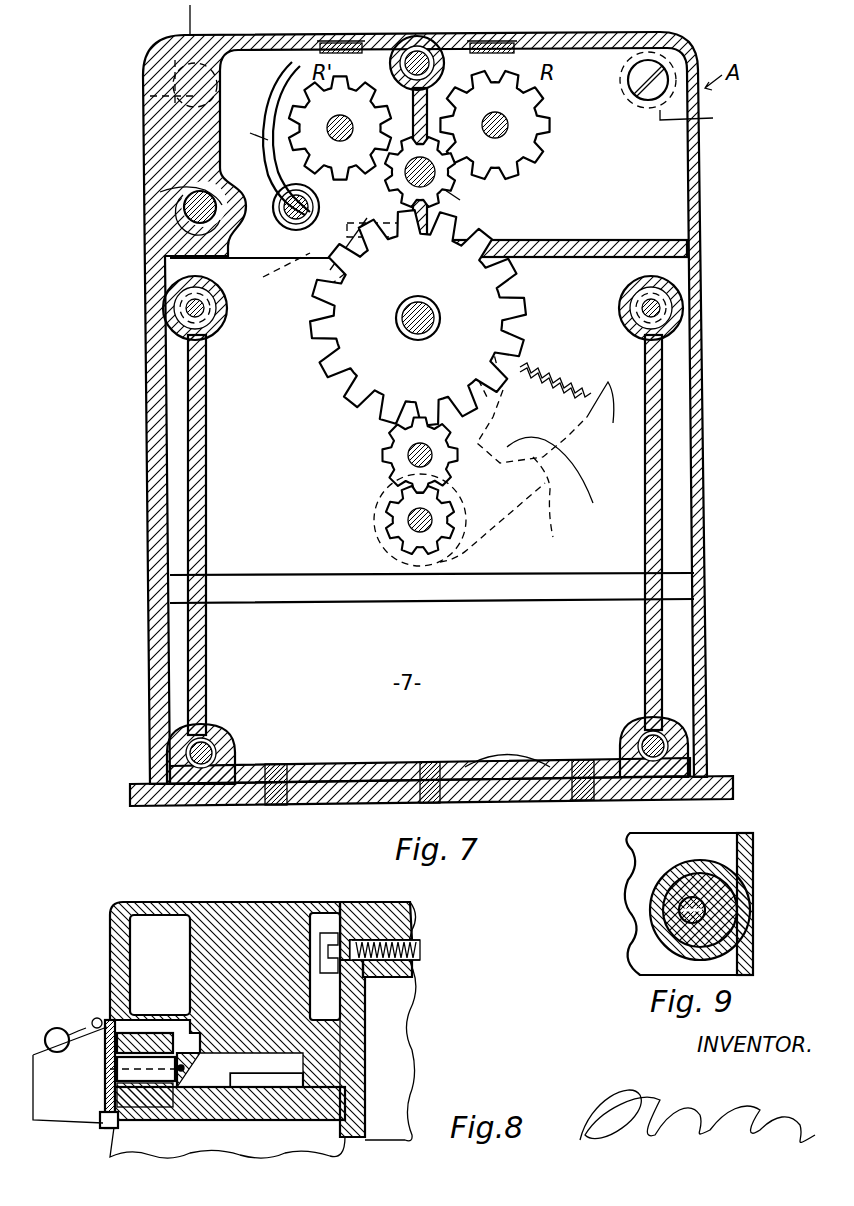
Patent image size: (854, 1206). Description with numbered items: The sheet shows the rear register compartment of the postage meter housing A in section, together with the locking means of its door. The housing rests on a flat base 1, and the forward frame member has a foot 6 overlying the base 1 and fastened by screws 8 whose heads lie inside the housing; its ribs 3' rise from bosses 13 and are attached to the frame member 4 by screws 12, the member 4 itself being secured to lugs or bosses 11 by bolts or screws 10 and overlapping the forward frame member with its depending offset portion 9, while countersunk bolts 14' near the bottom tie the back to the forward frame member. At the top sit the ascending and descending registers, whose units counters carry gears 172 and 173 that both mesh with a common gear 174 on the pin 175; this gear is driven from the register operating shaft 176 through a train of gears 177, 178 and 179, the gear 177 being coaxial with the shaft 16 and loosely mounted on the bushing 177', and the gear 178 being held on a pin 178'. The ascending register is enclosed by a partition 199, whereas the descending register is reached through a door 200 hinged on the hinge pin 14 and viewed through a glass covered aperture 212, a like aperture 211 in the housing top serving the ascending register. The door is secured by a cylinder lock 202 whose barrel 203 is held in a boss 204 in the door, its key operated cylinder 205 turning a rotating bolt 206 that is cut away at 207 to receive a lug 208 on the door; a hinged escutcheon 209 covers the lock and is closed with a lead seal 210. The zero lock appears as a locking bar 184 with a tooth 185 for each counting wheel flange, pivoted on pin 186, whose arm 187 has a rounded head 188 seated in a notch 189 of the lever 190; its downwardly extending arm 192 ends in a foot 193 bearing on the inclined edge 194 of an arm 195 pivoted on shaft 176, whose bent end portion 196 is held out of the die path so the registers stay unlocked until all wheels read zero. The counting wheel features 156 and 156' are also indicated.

In FIG. 7, the base 1 is at (356, 802).
In FIG. 7, the ribs 3' is at (425, 535).
In FIG. 8, the frame member 4 is at (355, 1015).
In FIG. 7, the foot 6 is at (395, 762).
In FIG. 7, the screws 8 is at (180, 24).
In FIG. 8, the depending offset portion 9 is at (133, 1003).
In FIG. 7, the bolts or screws 10 is at (663, 76).
In FIG. 8, the bolts or screws 10 is at (335, 940).
In FIG. 7, the lugs or bosses 11 is at (45, 162).
In FIG. 8, the lugs or bosses 11 is at (385, 977).
In FIG. 7, the screws 12 is at (185, 300).
In FIG. 7, the bosses 13 is at (185, 318).
In FIG. 7, the hinge pin 14 is at (427, 47).
In FIG. 7, the bolts or screws 14' is at (427, 734).
In FIG. 7, the shaft 16 is at (396, 318).
In FIG. 7, the spring end 156 is at (245, 130).
In FIG. 7, the spring end 156' is at (560, 148).
In FIG. 7, the gear 172 is at (520, 128).
In FIG. 7, the gear 173 is at (292, 110).
In FIG. 7, the common gear 174 is at (468, 178).
In FIG. 7, the pin 175 is at (455, 195).
In FIG. 7, the register operating shaft 176 is at (402, 520).
In FIG. 7, the gear 177 is at (400, 318).
In FIG. 7, the bushing 177' is at (329, 348).
In FIG. 7, the gear 178 is at (387, 455).
In FIG. 7, the pin 178' is at (355, 433).
In FIG. 7, the gear 179 is at (432, 518).
In FIG. 7, the locking bar 184 is at (290, 205).
In FIG. 7, the tooth 185 is at (265, 138).
In FIG. 7, the pin 186 is at (292, 220).
In FIG. 7, the arm 187 is at (300, 268).
In FIG. 7, the rounded head 188 is at (304, 287).
In FIG. 7, the notch 189 is at (333, 255).
In FIG. 7, the lever 190 is at (515, 270).
In FIG. 7, the downwardly extending arm 192 is at (452, 340).
In FIG. 7, the foot 193 is at (572, 478).
In FIG. 7, the inclined edge 194 is at (560, 509).
In FIG. 7, the arm 195 is at (492, 523).
In FIG. 7, the right angularly bent end portion 196 is at (578, 403).
In FIG. 7, the partition 199 is at (581, 247).
In FIG. 7, the door 200 is at (190, 61).
In FIG. 8, the cylinder lock 202 is at (98, 1105).
In FIG. 9, the cylinder lock 202 is at (721, 908).
In FIG. 8, the barrel 203 is at (128, 1044).
In FIG. 9, the barrel 203 is at (742, 922).
In FIG. 8, the boss 204 is at (178, 1018).
In FIG. 9, the boss 204 is at (655, 892).
In FIG. 8, the key operated cylinder 205 is at (135, 1068).
In FIG. 9, the key operated cylinder 205 is at (668, 937).
In FIG. 7, the rotating bolt 206 is at (187, 217).
In FIG. 8, the rotating bolt 206 is at (278, 1090).
In FIG. 7, the cut away 207 is at (192, 203).
In FIG. 8, the cut away 207 is at (238, 1060).
In FIG. 7, the lug 208 is at (203, 187).
In FIG. 8, the hinged escutcheon 209 is at (67, 1092).
In FIG. 8, the lead seal 210 is at (57, 1027).
In FIG. 7, the glass covered aperture 211 is at (490, 42).
In FIG. 7, the glass covered aperture 212 is at (340, 42).